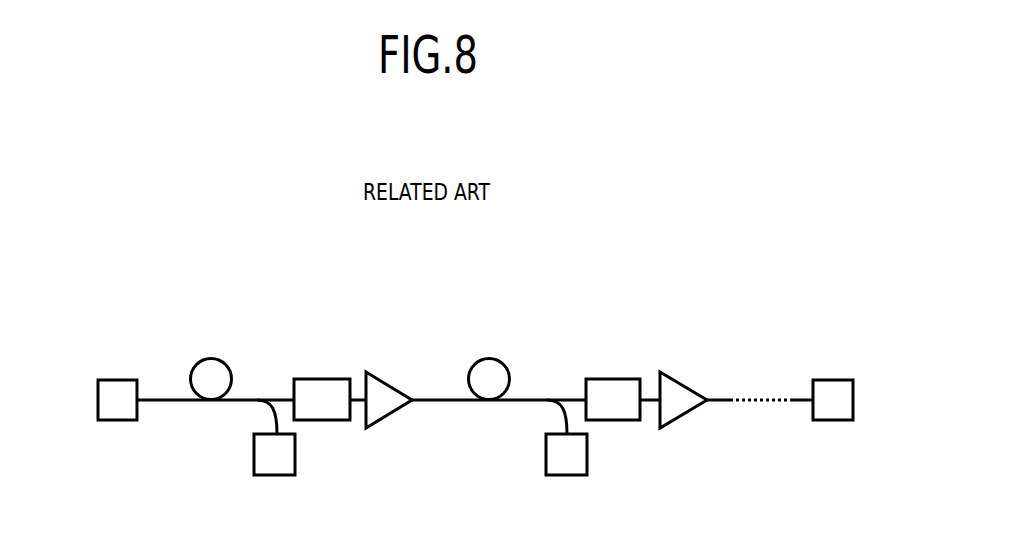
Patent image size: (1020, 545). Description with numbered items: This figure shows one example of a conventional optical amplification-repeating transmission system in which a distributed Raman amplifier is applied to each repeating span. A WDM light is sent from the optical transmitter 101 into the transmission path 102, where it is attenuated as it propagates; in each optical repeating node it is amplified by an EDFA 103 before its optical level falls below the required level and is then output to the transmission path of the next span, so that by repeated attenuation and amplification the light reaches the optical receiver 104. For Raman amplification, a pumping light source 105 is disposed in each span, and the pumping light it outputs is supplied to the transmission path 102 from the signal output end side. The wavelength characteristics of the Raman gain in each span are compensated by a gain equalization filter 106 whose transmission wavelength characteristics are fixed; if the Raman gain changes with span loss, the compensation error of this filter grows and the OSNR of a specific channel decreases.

The optical transmitter 101 is at (113, 380).
The transmission path 102 is at (204, 358).
The EDFA 103 is at (390, 380).
The optical receiver 104 is at (833, 380).
The pumping light source 105 is at (254, 455).
The gain equalization filter 106 is at (320, 379).